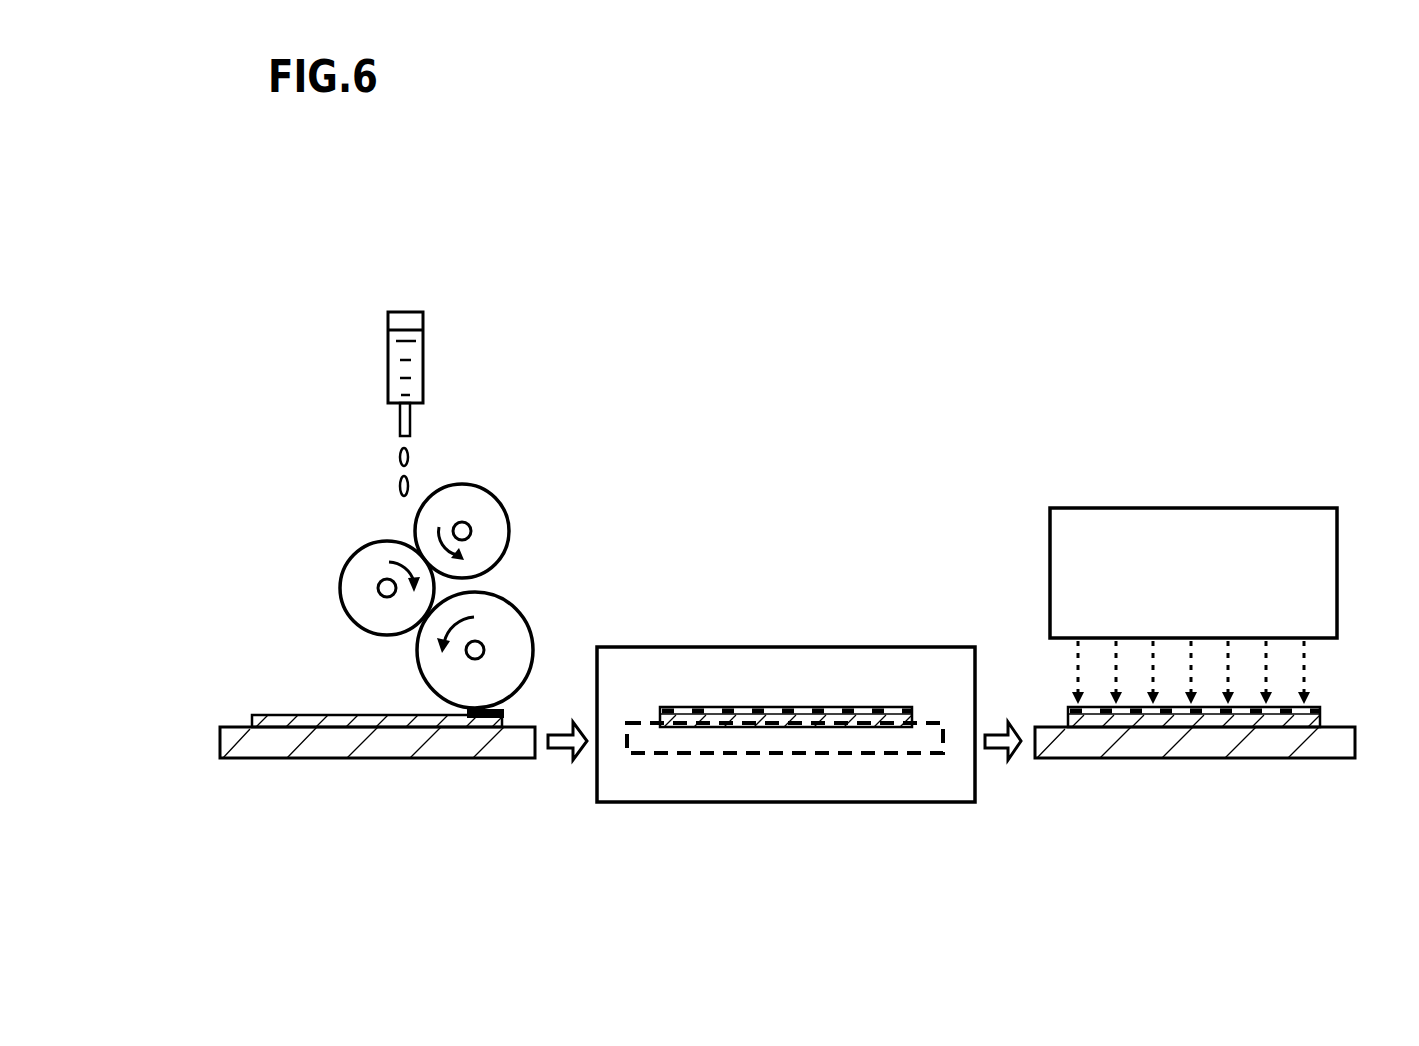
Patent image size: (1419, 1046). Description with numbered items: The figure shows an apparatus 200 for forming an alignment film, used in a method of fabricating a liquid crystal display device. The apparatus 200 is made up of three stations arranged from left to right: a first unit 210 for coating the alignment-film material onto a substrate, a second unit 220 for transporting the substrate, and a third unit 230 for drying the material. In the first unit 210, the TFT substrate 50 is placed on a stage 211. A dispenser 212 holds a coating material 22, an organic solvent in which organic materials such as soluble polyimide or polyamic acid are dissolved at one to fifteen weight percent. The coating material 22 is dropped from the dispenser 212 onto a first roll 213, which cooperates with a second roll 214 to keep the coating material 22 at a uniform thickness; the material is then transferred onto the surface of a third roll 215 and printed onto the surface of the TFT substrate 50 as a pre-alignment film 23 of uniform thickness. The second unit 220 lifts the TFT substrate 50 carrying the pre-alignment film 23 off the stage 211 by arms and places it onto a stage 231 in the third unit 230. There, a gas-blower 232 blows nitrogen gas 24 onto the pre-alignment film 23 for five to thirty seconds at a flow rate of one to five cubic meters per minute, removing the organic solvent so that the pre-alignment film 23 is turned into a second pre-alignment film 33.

The apparatus 200 is at (813, 185).
The first unit 210 is at (426, 279).
The second unit 220 is at (813, 279).
The third unit 230 is at (1223, 279).
The dispenser 212 is at (388, 360).
The coating material 22 is at (409, 453).
The first roll 213 is at (365, 548).
The second roll 214 is at (540, 483).
The third roll 215 is at (550, 587).
The TFT substrate 50 is at (287, 715).
The pre-alignment film 23 is at (488, 727).
The stage 211 is at (320, 750).
The gas-blower 232 is at (1157, 508).
The nitrogen gas 24 is at (1309, 658).
The second pre-alignment film 33 is at (1266, 725).
The stage 231 is at (1085, 750).